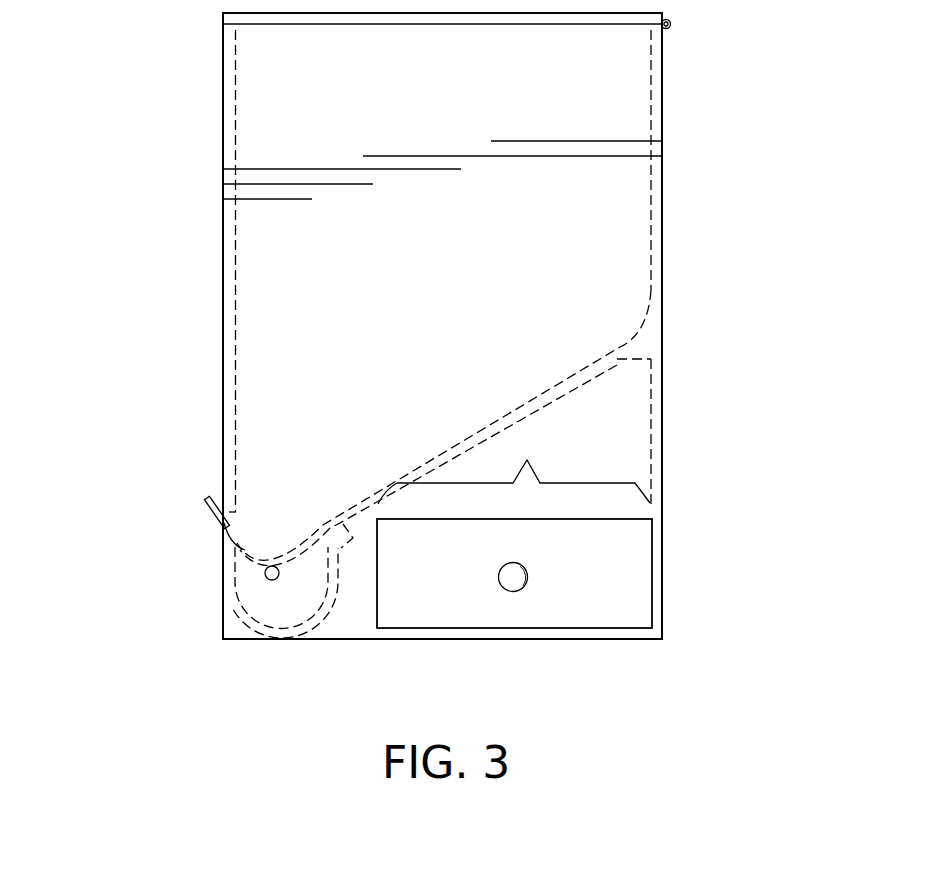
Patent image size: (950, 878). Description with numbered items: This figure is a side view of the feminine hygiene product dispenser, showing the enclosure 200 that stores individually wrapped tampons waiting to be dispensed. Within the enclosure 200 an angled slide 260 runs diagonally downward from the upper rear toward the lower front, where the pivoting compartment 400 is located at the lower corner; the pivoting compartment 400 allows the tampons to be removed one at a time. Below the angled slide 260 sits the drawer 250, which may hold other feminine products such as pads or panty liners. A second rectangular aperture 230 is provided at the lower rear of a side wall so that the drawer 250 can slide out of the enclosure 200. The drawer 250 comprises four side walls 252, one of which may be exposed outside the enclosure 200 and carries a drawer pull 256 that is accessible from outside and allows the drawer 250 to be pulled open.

The enclosure 200 is at (135, 640).
The angled slide 260 is at (470, 435).
The drawer 250 is at (527, 460).
The second rectangular aperture 230 is at (586, 604).
The side walls 252 is at (592, 608).
The drawer pull 256 is at (505, 587).
The pivoting compartment 400 is at (273, 625).